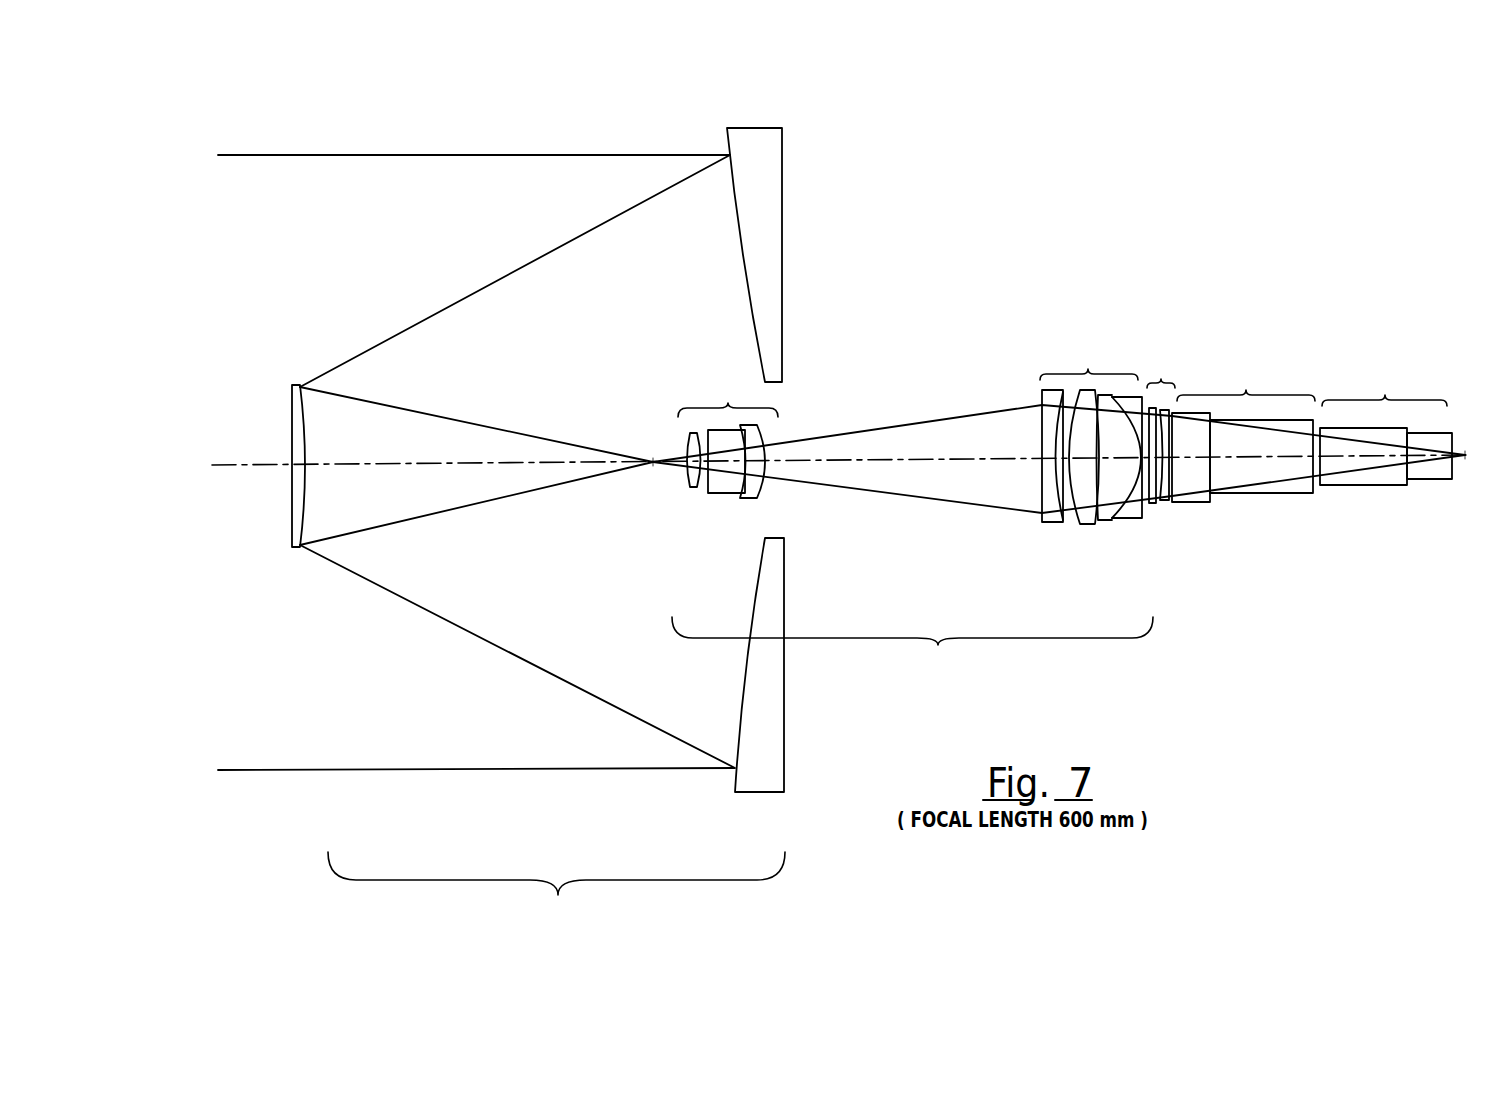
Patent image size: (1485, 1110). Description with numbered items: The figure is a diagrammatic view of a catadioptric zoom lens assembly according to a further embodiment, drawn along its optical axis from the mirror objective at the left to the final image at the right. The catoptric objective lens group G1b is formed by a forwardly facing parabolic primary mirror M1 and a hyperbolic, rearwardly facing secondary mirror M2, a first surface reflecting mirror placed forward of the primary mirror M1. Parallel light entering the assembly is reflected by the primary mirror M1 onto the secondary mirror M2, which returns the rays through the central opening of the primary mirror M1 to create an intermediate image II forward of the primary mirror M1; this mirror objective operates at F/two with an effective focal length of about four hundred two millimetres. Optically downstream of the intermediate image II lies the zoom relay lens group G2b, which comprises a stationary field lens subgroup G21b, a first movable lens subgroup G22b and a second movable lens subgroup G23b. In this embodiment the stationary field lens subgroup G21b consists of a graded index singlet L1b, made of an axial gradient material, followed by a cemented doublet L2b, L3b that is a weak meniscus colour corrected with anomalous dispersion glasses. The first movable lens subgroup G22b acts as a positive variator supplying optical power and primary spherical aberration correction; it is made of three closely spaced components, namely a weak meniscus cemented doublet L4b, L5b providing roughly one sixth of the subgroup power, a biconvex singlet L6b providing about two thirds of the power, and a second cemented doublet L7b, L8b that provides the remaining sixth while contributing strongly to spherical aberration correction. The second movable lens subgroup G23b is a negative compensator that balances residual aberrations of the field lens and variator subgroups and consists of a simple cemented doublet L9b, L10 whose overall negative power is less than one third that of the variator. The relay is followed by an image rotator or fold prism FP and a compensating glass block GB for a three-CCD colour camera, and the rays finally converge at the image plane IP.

The primary mirror M1 is at (740, 128).
The secondary mirror M2 is at (291, 405).
The intermediate image II is at (651, 460).
The catoptric objective lens group G1b is at (556, 891).
The zoom relay lens group G2b is at (912, 647).
The stationary field lens subgroup G21b is at (728, 398).
The first movable lens subgroup G22b is at (1089, 363).
The second movable lens subgroup G23b is at (1178, 374).
The graded index singlet L1b is at (688, 483).
The lens L2b is at (733, 488).
The lens L3b is at (758, 505).
The lens L4b is at (1042, 524).
The lens L5b is at (1065, 524).
The biconvex singlet L6b is at (1097, 523).
The lens element L7b is at (1116, 519).
The lens element L8b is at (1148, 513).
The lens L9b is at (1160, 512).
The lens L10 is at (1172, 503).
The image rotator (fold prism) FP is at (1246, 432).
The compensating glass block GB is at (1386, 430).
The image plane IP is at (1472, 460).